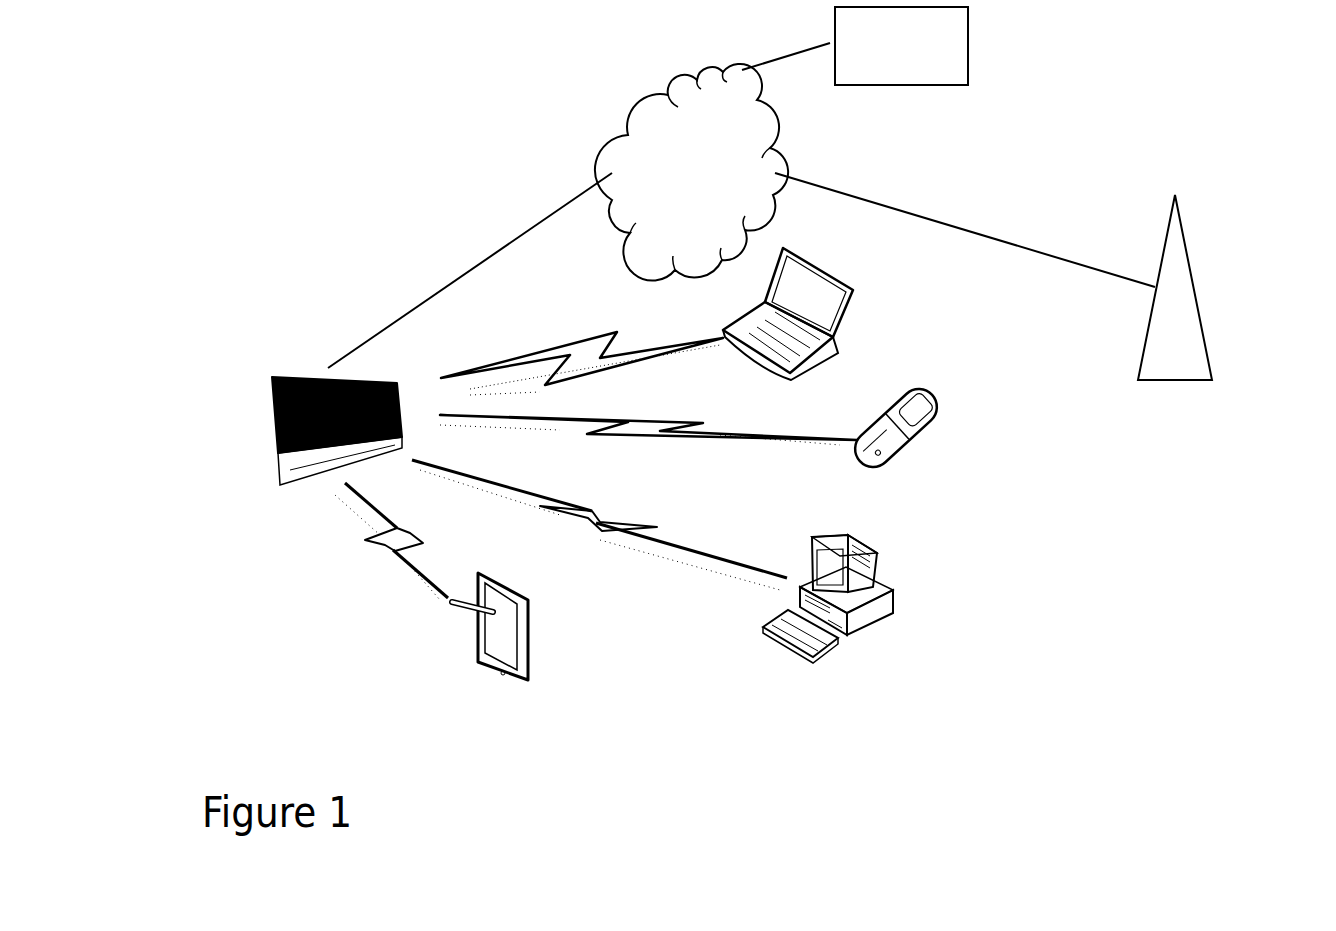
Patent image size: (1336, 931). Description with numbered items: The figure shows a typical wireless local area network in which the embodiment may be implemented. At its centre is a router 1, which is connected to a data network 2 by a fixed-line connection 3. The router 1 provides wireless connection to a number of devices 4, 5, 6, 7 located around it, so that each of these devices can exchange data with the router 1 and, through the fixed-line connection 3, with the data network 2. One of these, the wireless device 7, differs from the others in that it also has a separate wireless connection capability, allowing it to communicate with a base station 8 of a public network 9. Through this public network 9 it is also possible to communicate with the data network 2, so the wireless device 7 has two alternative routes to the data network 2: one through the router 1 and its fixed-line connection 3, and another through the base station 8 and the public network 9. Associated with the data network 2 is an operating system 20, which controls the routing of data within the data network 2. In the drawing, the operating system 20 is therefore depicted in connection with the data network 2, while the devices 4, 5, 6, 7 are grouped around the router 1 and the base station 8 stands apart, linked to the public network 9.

The router 1 is at (332, 404).
The data network 2 is at (691, 148).
The fixed-line connection 3 is at (470, 270).
The device 4 is at (465, 610).
The device 5 is at (664, 590).
The device 6 is at (678, 318).
The wireless device 7 is at (708, 446).
The base station 8 is at (1213, 287).
The public network 9 is at (965, 230).
The operating system 20 is at (881, 46).